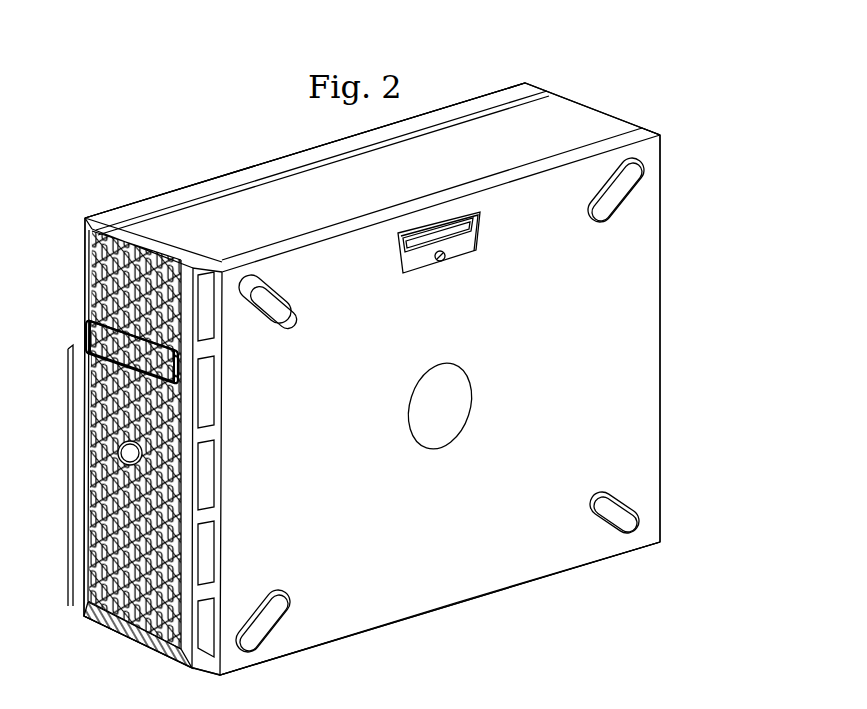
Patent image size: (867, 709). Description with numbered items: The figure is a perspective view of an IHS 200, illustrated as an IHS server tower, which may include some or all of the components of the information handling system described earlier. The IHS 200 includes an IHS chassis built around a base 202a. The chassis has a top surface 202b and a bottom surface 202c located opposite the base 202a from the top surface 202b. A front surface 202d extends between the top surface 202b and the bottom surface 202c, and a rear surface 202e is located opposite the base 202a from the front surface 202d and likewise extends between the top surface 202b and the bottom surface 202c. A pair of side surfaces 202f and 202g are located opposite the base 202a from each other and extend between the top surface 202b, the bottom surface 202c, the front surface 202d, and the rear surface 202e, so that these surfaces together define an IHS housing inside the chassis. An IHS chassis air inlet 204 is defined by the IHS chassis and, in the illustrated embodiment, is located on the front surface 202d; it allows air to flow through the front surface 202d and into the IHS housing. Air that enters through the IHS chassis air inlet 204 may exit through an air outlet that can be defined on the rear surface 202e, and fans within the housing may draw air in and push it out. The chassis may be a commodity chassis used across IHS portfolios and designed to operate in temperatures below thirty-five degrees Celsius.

The IHS 200 is at (172, 104).
The base 202a is at (669, 217).
The top surface 202b is at (572, 112).
The bottom surface 202c is at (455, 603).
The front surface 202d is at (82, 296).
The rear surface 202e is at (662, 306).
The side surface 202f is at (553, 563).
The side surface 202g is at (289, 156).
The IHS chassis air inlet 204 is at (70, 472).